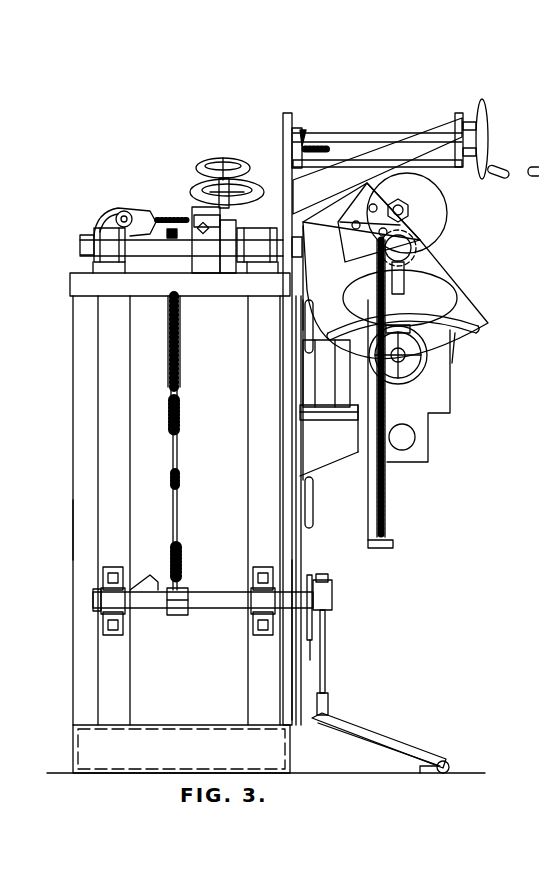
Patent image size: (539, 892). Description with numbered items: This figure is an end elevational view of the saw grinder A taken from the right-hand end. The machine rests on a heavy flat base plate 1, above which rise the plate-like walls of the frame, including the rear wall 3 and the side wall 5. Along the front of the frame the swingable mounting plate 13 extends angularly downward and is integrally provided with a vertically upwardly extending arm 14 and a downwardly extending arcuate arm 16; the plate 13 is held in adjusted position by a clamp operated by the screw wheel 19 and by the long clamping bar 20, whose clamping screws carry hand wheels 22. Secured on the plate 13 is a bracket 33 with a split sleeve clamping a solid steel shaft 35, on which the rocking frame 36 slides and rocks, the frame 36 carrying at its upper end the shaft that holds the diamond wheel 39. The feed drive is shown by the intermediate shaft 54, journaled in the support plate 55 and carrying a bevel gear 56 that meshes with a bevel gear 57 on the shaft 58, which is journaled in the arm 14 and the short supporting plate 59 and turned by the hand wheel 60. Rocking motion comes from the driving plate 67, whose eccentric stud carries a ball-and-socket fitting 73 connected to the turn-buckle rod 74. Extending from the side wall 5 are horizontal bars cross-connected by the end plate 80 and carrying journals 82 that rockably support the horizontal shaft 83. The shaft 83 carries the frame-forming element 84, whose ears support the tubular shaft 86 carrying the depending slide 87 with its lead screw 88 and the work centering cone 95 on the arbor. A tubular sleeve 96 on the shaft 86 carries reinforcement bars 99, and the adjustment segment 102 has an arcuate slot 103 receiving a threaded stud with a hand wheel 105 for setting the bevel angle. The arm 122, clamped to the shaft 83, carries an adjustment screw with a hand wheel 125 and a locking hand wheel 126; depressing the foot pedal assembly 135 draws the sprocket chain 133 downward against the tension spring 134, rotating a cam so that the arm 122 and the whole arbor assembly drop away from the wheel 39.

The base plate 1 is at (72, 738).
The rear wall 3 is at (72, 434).
The side wall 5 is at (72, 396).
The grinder A is at (68, 492).
The swingable mounting plate 13 is at (292, 398).
The vertically upwardly extending arm 14 is at (289, 113).
The downwardly extending arcuate arm 16 is at (297, 560).
The screw wheel 19 is at (310, 640).
The long clamping bar 20 is at (296, 454).
The hand wheels 22 is at (300, 310).
The bracket 33 is at (332, 462).
The solid steel shaft 35 is at (403, 450).
The rocking frame 36 is at (452, 386).
The diamond wheel 39 is at (428, 205).
The intermediate shaft 54 is at (310, 380).
The support plate 55 is at (435, 168).
The bevel gear 56 is at (316, 145).
The bevel gear 57 is at (304, 128).
The shaft 58 is at (380, 135).
The short supporting plate 59 is at (480, 155).
The hand wheel 60 is at (484, 102).
The driving plate 67 is at (103, 220).
The ball-and-socket fitting 73 is at (133, 214).
The turn-buckle rod 74 is at (172, 216).
The end plate 80 is at (70, 288).
The journals 82 is at (94, 248).
The horizontal shaft 83 is at (158, 262).
The frame-forming element 84 is at (377, 229).
The tubular shaft 86 is at (435, 232).
The depending slide 87 is at (370, 540).
The lead screw 88 is at (387, 519).
The work centering cone 95 is at (402, 322).
The tubular sleeve 96 is at (430, 252).
The reinforcement bars 99 is at (360, 432).
The adjustment segment 102 is at (452, 274).
The arcuate slot 103 is at (470, 328).
The hand wheel 105 is at (455, 352).
The arm 122 is at (205, 272).
The hand wheel 125 is at (228, 158).
The locking hand wheel 126 is at (204, 186).
The sprocket chain 133 is at (182, 377).
The tension spring 134 is at (182, 556).
The foot pedal assembly 135 is at (340, 602).